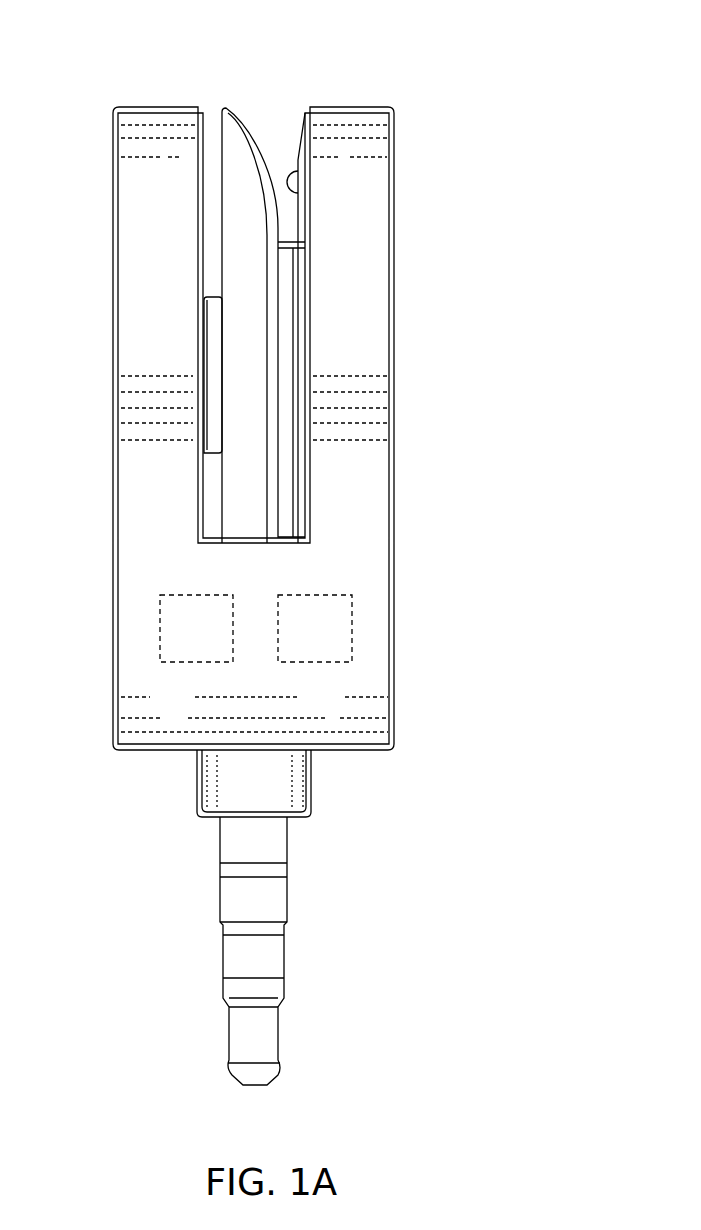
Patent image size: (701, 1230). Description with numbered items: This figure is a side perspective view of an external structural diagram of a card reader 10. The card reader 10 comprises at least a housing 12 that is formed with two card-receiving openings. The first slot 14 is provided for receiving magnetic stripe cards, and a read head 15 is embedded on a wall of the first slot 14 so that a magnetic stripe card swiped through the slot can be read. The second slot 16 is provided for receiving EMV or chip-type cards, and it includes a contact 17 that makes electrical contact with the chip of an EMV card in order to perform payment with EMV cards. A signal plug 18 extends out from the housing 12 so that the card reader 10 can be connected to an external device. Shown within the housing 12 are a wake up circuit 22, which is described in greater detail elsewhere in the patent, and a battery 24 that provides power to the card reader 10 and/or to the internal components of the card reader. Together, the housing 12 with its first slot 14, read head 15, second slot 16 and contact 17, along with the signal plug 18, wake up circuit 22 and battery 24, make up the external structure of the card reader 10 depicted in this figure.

The card reader 10 is at (264, 545).
The housing 12 is at (394, 300).
The first slot 14 is at (212, 100).
The read head 15 is at (195, 343).
The second slot 16 is at (293, 98).
The contact 17 is at (288, 160).
The signal plug 18 is at (300, 880).
The wake up circuit 22 is at (172, 633).
The battery 24 is at (337, 635).